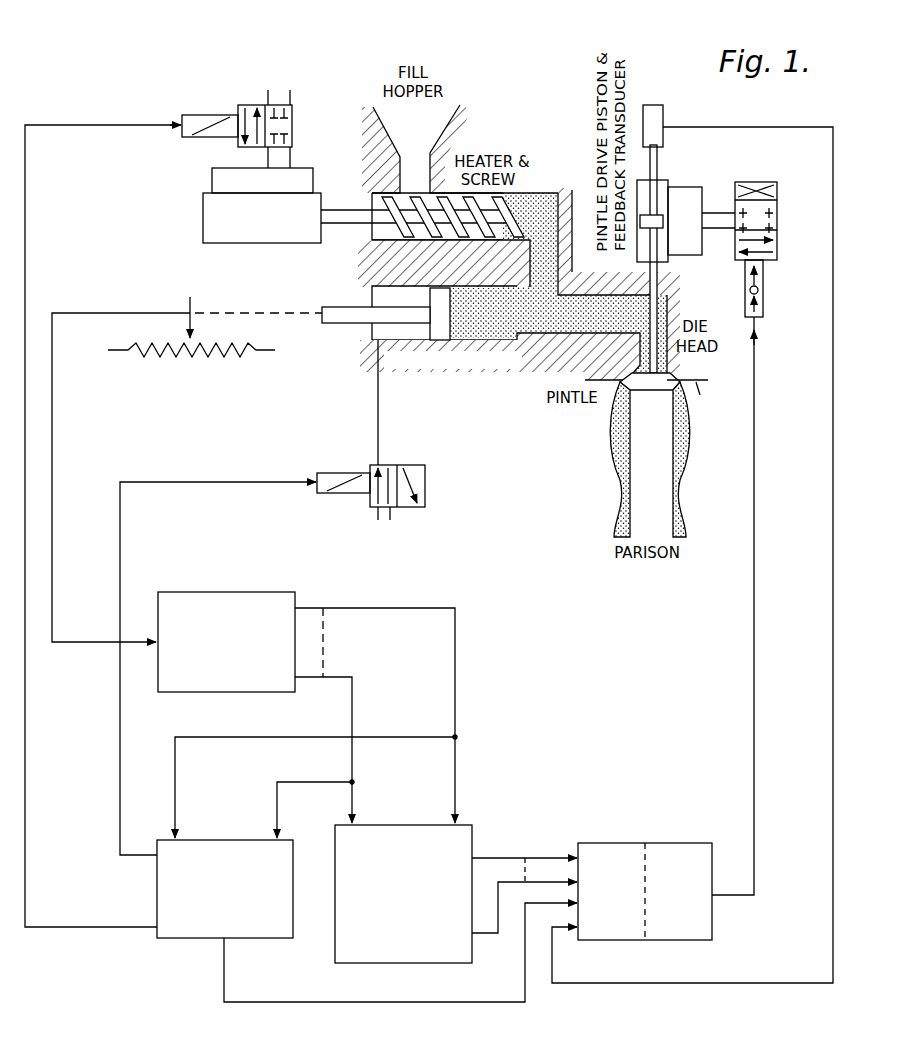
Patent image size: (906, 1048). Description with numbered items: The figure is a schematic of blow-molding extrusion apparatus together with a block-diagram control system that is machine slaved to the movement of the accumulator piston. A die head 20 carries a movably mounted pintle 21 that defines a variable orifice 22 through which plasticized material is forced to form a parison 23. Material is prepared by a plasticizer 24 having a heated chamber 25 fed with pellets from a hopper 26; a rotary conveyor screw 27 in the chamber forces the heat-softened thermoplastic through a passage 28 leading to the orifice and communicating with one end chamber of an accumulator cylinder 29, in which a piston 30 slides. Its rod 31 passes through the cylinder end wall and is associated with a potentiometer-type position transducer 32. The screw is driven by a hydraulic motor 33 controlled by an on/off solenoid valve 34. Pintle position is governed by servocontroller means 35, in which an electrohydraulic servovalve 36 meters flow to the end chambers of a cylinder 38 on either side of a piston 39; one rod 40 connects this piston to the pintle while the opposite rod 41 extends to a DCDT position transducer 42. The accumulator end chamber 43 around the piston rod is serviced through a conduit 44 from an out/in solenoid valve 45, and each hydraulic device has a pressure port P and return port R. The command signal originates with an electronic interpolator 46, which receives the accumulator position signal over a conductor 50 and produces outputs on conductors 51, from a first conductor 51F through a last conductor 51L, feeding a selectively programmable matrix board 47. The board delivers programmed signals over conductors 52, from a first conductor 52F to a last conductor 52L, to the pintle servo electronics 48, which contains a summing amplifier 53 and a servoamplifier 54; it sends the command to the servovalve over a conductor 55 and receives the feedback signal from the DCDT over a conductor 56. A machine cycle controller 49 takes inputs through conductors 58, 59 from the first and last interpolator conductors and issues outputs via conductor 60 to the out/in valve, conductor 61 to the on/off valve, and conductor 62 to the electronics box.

The die head 20 is at (700, 395).
The pintle 21 is at (648, 390).
The variable orifice 22 is at (690, 376).
The parison 23 is at (688, 458).
The plasticizer 24 is at (378, 191).
The heated chamber 25 is at (372, 246).
The hopper 26 is at (458, 122).
The rotary conveyor screw 27 is at (480, 243).
The passage 28 is at (533, 275).
The accumulator cylinder 29 is at (372, 287).
The accumulator piston 30 is at (430, 300).
The piston rod 31 is at (334, 324).
The position transducer 32 is at (155, 304).
The hydraulic motor 33 is at (203, 223).
The on/off solenoid valve 34 is at (292, 128).
The servocontroller means 35 is at (670, 181).
The electrohydraulic servovalve 36 is at (757, 181).
The cylinder 38 is at (668, 199).
The piston 39 is at (664, 223).
The rod 40 is at (640, 278).
The rod 41 is at (658, 158).
The position transducer 42 is at (666, 112).
The end chamber 43 is at (386, 340).
The conduit 44 is at (379, 404).
The out/in solenoid valve 45 is at (426, 464).
The electronic interpolator 46 is at (300, 590).
The matrix board 47 is at (474, 824).
The pintle servo electronics 48 is at (713, 842).
The machine cycle controller 49 is at (156, 839).
The conductor 50 is at (53, 450).
The conductors 51 is at (324, 644).
The first conductor 51F is at (456, 642).
The last conductor 51L is at (353, 694).
The conductors 52 is at (524, 869).
The first conductor 52F is at (543, 857).
The last conductor 52L is at (484, 942).
The summing amplifier 53 is at (610, 843).
The servoamplifier 54 is at (677, 843).
The conductor 55 is at (753, 669).
The conductor 56 is at (832, 669).
The conductor 58 is at (176, 789).
The conductor 59 is at (276, 789).
The conductor 60 is at (120, 693).
The conductor 61 is at (26, 741).
The conductor 62 is at (322, 1001).